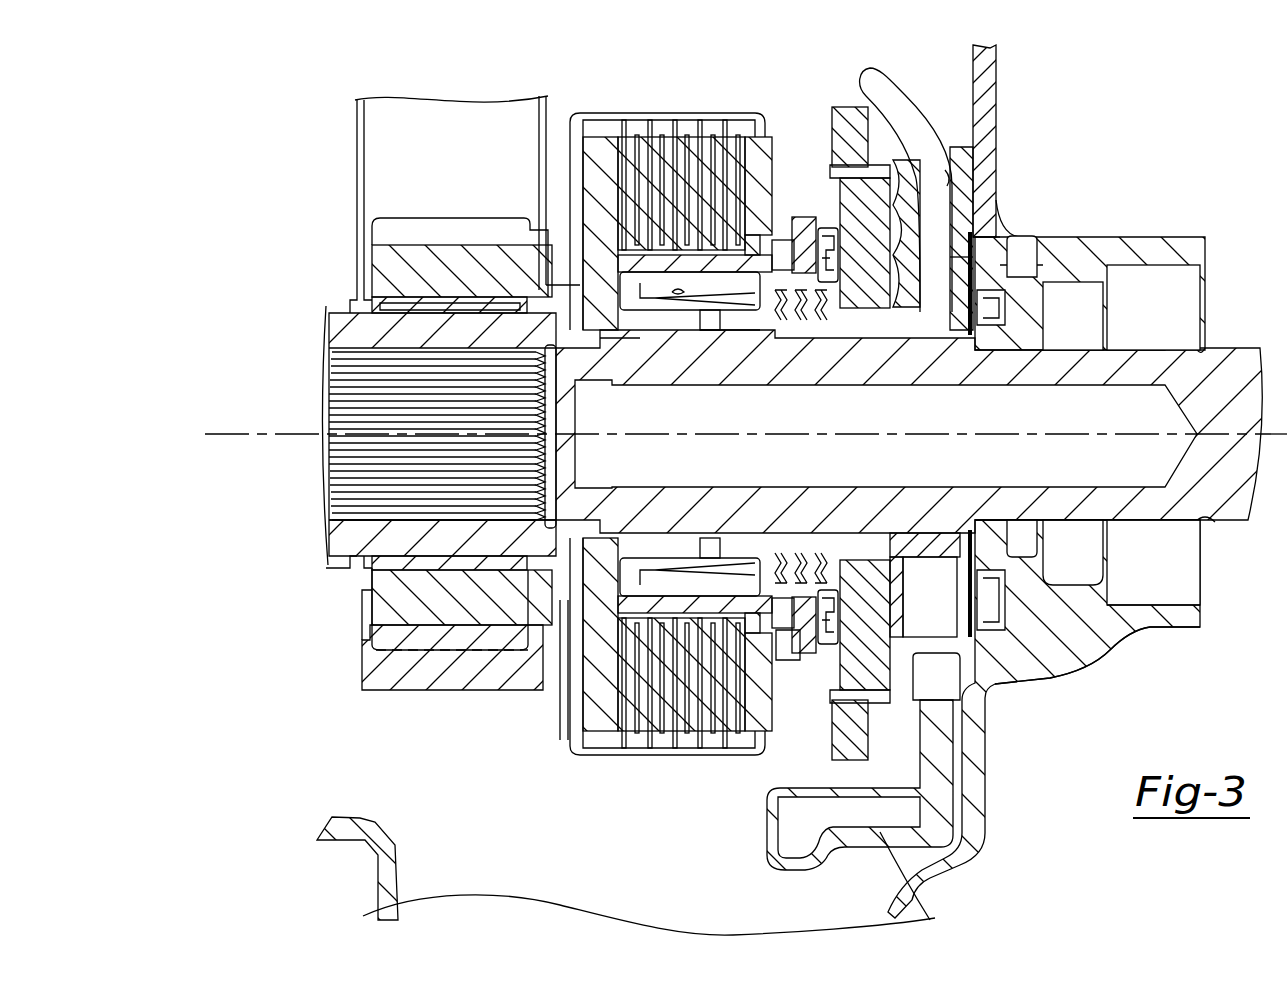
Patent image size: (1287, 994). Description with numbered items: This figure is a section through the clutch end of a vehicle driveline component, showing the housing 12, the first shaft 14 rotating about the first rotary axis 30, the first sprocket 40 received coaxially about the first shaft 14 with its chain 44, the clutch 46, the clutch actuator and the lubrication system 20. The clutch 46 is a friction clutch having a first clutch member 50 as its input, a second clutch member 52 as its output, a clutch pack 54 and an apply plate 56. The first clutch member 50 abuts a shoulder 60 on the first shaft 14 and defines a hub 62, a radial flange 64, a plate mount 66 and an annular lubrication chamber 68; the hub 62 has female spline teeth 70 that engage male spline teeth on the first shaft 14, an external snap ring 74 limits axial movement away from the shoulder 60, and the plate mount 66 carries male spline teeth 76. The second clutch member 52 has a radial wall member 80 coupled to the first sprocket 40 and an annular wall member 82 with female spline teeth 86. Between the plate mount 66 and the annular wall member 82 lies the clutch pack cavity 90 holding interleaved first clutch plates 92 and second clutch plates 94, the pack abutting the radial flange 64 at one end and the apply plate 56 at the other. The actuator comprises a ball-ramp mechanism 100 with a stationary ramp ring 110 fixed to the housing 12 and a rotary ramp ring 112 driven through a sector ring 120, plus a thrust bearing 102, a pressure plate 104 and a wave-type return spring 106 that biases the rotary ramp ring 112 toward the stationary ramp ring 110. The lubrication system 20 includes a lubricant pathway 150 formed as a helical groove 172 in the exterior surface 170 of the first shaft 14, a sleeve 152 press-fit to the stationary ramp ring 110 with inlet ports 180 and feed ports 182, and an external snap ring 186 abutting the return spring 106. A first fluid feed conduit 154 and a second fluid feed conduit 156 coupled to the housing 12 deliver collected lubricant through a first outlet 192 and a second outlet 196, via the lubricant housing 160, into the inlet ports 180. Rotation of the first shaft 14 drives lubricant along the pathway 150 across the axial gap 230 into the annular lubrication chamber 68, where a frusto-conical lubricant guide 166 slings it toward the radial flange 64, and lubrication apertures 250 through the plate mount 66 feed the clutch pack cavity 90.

The housing 12 is at (985, 66).
The first shaft 14 is at (334, 308).
The lubrication system 20 is at (945, 128).
The first rotary axis 30 is at (215, 432).
The first sprocket 40 is at (392, 604).
The chain 44 is at (402, 688).
The clutch 46 is at (740, 72).
The first clutch member 50 is at (600, 160).
The second clutch member 52 is at (574, 114).
The clutch pack 54 is at (755, 150).
The apply plate 56 is at (760, 704).
The shoulder 60 is at (577, 336).
The hub 62 is at (650, 348).
The radial flange 64 is at (573, 729).
The plate mount 66 is at (593, 548).
The annular lubrication chamber 68 is at (580, 605).
The female spline teeth 70 is at (627, 532).
The external snap ring 74 is at (745, 344).
The male spline teeth 76 is at (616, 284).
The radial wall member 80 is at (580, 699).
The annular wall member 82 is at (665, 758).
The female spline teeth 86 is at (590, 744).
The clutch pack cavity 90 is at (598, 764).
The first clutch plates 92 is at (650, 190).
The second clutch plates 94 is at (700, 195).
The ball-ramp mechanism 100 is at (876, 565).
The thrust bearing 102 is at (870, 272).
The pressure plate 104 is at (805, 232).
The return spring 106 is at (832, 292).
The stationary ramp ring 110 is at (1010, 252).
The rotary ramp ring 112 is at (1000, 698).
The sector ring 120 is at (845, 115).
The lubricant pathway 150 is at (922, 532).
The sleeve 152 is at (1040, 520).
The first fluid feed conduit 154 is at (905, 900).
The second fluid feed conduit 156 is at (888, 88).
The lubricant housing 160 is at (965, 212).
The lubricant guide 166 is at (700, 545).
The exterior surface 170 is at (915, 257).
The groove 172 is at (790, 560).
The inlet ports 180 is at (1027, 303).
The feed ports 182 is at (892, 342).
The external snap ring 186 is at (795, 332).
The first outlet 192 is at (950, 690).
The second outlet 196 is at (975, 185).
The axial gap 230 is at (772, 652).
The lubrication apertures 250 is at (690, 290).